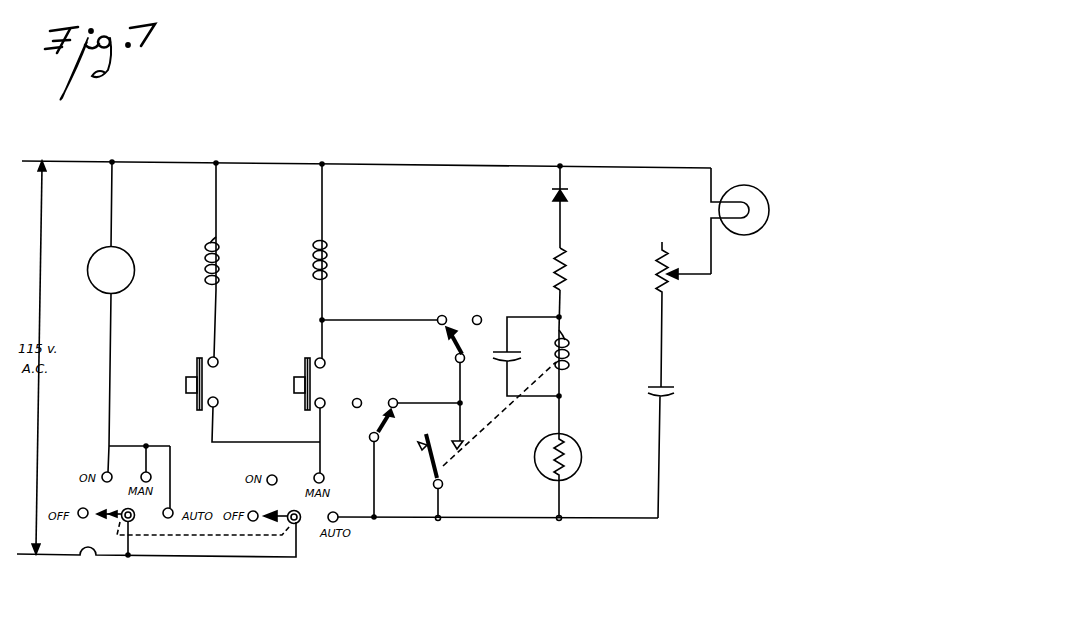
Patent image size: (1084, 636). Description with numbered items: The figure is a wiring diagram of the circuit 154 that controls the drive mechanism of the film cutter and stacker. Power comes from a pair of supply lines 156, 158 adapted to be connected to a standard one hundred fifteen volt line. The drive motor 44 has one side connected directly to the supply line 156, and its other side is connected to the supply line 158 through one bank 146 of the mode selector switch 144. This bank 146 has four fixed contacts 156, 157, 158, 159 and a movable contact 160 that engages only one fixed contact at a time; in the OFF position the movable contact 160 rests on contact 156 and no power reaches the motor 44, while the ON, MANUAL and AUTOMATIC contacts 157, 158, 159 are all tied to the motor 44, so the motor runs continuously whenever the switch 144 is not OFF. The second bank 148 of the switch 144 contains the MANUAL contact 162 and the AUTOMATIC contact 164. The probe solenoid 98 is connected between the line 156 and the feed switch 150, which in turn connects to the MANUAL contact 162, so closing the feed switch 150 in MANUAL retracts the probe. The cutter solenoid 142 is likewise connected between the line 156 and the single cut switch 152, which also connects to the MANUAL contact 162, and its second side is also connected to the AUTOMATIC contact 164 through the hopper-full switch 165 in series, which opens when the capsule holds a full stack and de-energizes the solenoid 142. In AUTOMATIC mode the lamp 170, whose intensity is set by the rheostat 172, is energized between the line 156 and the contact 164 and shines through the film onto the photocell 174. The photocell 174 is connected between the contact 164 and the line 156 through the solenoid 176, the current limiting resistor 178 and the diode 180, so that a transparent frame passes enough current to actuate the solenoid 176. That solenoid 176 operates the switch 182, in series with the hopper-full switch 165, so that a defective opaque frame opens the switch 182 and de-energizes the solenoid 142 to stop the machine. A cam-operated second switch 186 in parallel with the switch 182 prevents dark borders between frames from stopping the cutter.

The drive motor 44 is at (135, 271).
The solenoid 98 is at (222, 272).
The second solenoid 142 is at (330, 266).
The mode selector switch 144 is at (237, 537).
The bank of contacts 146 is at (151, 512).
The second bank 148 is at (309, 528).
The feed switch 150 is at (185, 384).
The single cut switch 152 is at (294, 384).
The circuit 154 is at (455, 153).
The supply line 156 is at (80, 161).
The fixed contact 157 is at (103, 472).
The supply line 158 is at (151, 477).
The fixed contact 159 is at (172, 508).
The movable contact 160 is at (117, 521).
The MANUAL contact 162 is at (315, 476).
The AUTOMATIC contact 164 is at (333, 512).
The hopper-full switch 165 is at (457, 323).
The lamp 170 is at (744, 186).
The rheostat 172 is at (656, 260).
The photocell 174 is at (583, 449).
The solenoid 176 is at (571, 348).
The current limiting resistor 178 is at (553, 268).
The diode 180 is at (558, 199).
The switch 182 is at (430, 465).
The second switch 186 is at (380, 412).